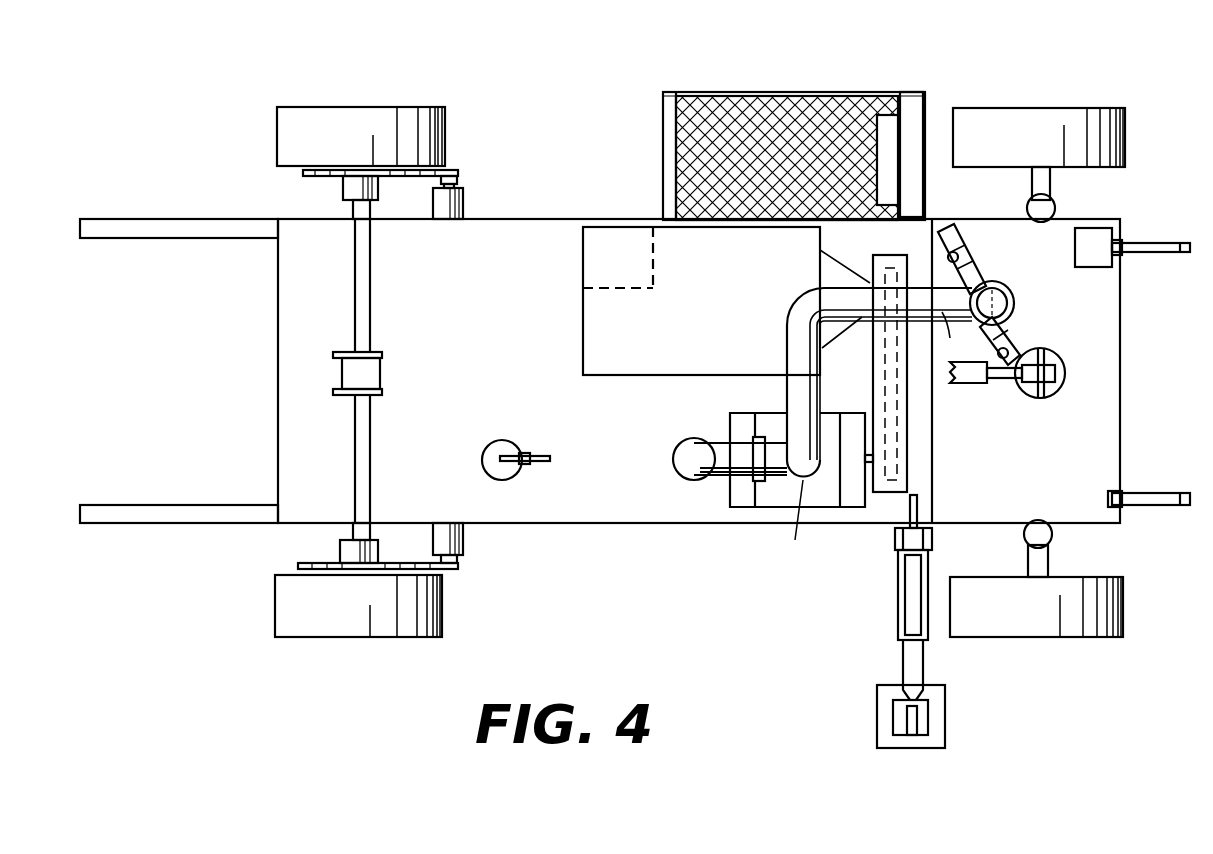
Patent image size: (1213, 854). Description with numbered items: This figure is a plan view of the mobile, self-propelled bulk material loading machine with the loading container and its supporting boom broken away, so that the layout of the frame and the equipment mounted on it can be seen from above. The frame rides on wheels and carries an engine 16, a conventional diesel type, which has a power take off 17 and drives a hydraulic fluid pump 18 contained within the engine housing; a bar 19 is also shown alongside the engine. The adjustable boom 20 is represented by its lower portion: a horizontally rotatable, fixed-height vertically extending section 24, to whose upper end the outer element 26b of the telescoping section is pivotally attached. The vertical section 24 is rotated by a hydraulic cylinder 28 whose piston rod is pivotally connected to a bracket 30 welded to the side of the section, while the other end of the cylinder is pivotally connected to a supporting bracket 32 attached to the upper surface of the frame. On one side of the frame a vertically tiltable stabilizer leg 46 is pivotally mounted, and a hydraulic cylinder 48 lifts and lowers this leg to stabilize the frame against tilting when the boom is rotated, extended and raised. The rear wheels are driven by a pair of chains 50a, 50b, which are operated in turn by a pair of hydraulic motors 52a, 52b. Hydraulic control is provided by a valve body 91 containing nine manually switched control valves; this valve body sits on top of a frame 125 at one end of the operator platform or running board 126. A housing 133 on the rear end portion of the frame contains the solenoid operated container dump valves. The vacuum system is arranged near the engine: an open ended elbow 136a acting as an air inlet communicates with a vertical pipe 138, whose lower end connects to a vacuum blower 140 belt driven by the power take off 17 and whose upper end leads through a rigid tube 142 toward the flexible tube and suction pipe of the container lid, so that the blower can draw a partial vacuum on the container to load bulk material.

The engine 16 is at (607, 390).
The power take off 17 is at (836, 274).
The hydraulic fluid pump 18 is at (583, 284).
The slot bar 19 is at (880, 372).
The adjustable boom 20 is at (1067, 402).
The vertically extending section 24 is at (1057, 364).
The outer element 26b is at (967, 390).
The hydraulic cylinder 28 is at (976, 283).
The bracket 30 is at (1020, 352).
The supporting bracket 32 is at (954, 226).
The stabilizer leg 46 is at (893, 716).
The hydraulic cylinder 48 is at (905, 597).
The chain 50a is at (312, 563).
The chain 50b is at (318, 178).
The hydraulic motor 52a is at (463, 542).
The hydraulic motor 52b is at (465, 205).
The valve body 91 is at (928, 110).
The frame 125 is at (888, 118).
The operator platform 126 is at (800, 65).
The housing 133 is at (1097, 234).
The open ended elbow 136a is at (680, 462).
The vertical pipe 138 is at (817, 519).
The vacuum blower 140 is at (764, 512).
The rigid tube 142 is at (962, 336).